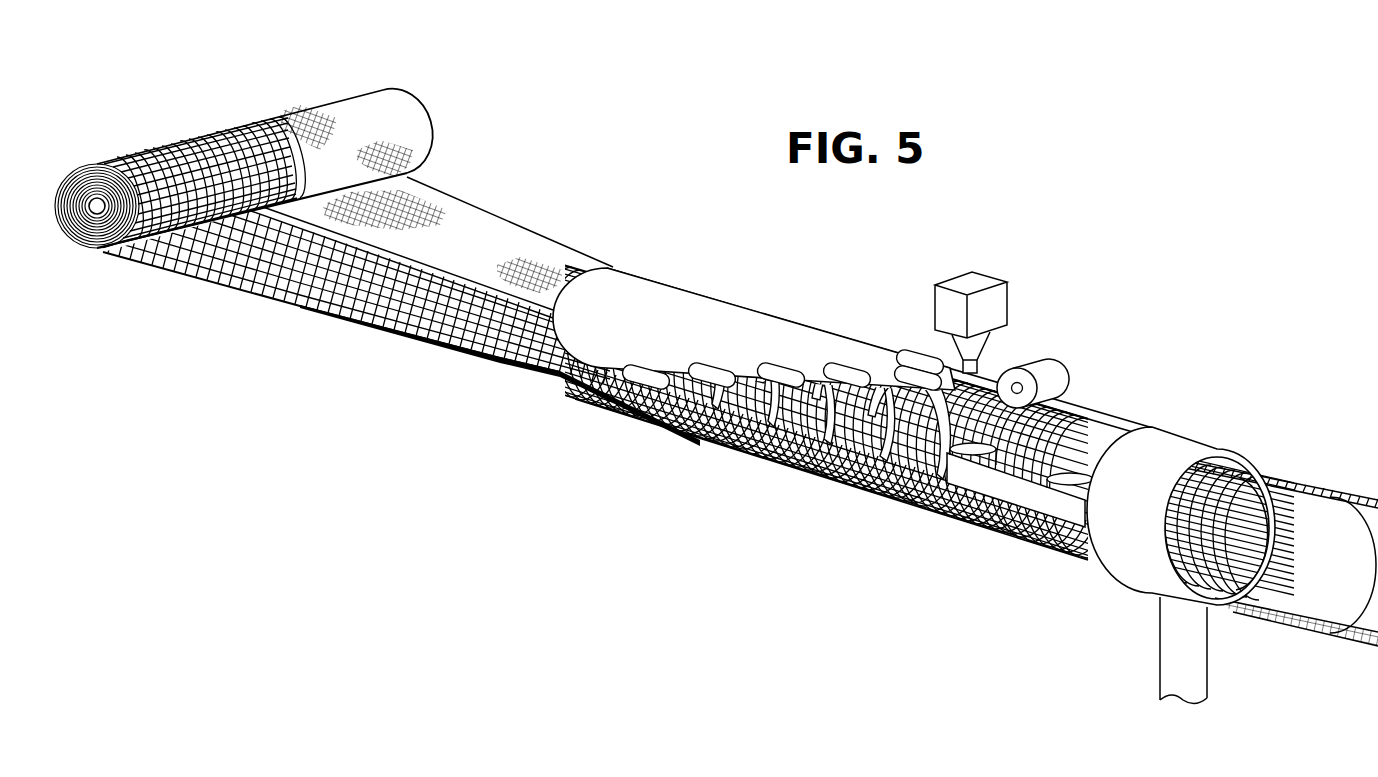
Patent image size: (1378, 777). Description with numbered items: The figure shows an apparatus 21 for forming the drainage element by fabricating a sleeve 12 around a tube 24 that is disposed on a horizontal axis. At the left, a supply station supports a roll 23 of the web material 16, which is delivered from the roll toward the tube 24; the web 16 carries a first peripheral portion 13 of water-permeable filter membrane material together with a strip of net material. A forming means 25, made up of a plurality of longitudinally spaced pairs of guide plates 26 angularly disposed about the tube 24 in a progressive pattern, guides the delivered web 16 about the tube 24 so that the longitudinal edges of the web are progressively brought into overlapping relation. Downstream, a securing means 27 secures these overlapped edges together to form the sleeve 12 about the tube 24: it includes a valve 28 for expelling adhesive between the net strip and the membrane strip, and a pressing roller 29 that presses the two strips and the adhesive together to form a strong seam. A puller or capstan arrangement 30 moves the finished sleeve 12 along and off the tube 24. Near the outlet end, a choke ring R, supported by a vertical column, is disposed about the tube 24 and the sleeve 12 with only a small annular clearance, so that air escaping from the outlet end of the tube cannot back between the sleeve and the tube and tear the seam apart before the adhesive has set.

The sleeve 12 is at (1293, 487).
The first peripheral portion 13 is at (496, 214).
The web 16 is at (258, 303).
The apparatus 21 is at (804, 250).
The roll 23 is at (290, 86).
The tube 24 is at (667, 292).
The forming means 25 is at (755, 492).
The guide plates 26 is at (737, 457).
The securing means 27 is at (1022, 228).
The valve 28 is at (985, 365).
The pressing roller 29 is at (1058, 370).
The puller or capstan arrangement 30 is at (1007, 500).
The choke ring R is at (1187, 438).